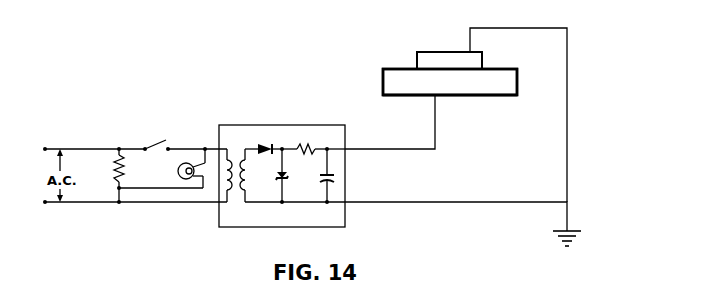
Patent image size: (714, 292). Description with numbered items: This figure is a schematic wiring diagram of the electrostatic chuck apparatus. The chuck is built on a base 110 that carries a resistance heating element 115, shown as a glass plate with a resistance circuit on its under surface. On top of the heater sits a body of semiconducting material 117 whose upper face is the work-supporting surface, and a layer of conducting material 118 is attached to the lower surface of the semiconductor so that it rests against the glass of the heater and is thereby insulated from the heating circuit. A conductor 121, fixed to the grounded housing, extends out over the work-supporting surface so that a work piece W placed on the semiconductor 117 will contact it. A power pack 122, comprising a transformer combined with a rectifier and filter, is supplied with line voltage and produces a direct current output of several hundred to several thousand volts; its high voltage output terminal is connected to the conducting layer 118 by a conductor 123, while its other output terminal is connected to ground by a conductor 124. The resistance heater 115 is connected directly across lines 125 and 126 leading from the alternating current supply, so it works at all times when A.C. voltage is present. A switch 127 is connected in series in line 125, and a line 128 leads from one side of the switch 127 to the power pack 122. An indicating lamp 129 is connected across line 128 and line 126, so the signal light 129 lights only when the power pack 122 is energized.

The base 110 is at (370, 70).
The resistance heating element 115 is at (116, 165).
The body of semiconducting material 117 is at (499, 70).
The layer of conducting material 118 is at (473, 96).
The conductor 121 is at (521, 27).
The power pack 122 is at (270, 124).
The conductor 123 is at (402, 148).
The conductor 124 is at (401, 201).
The line 125 is at (90, 146).
The line 126 is at (97, 204).
The switch 127 is at (158, 139).
The line 128 is at (181, 148).
The indicating lamp 129 is at (178, 171).
The work piece W is at (424, 60).